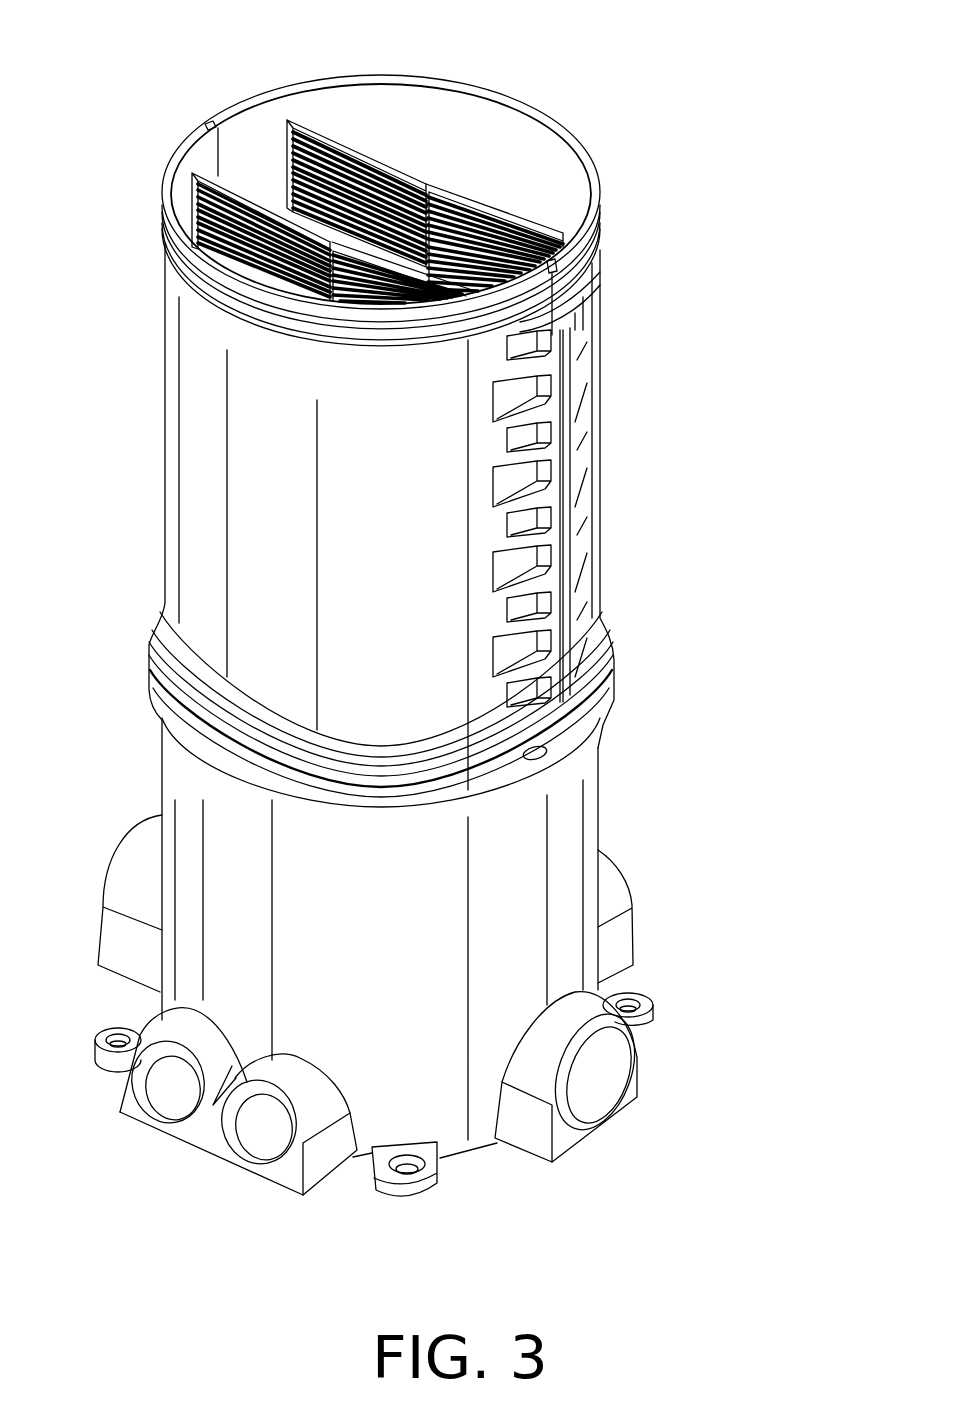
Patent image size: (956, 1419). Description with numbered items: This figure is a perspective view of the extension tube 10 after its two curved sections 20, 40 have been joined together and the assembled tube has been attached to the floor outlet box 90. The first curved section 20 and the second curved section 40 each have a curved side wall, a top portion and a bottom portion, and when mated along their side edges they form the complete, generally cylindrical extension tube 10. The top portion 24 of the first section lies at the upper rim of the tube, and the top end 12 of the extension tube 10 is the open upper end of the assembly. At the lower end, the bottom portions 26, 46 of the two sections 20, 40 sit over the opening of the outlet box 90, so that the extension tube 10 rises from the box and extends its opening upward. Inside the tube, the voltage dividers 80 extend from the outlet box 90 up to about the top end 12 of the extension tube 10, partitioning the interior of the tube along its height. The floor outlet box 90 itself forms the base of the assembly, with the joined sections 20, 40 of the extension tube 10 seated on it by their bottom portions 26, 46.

The extension tube 10 is at (690, 210).
The top end 12 is at (377, 122).
The curved section 20 is at (210, 462).
The top portion 24 is at (193, 137).
The bottom portion 26 is at (182, 722).
The curved section 40 is at (588, 478).
The bottom portion 46 is at (610, 672).
The voltage dividers 80 is at (435, 183).
The floor outlet box 90 is at (600, 800).